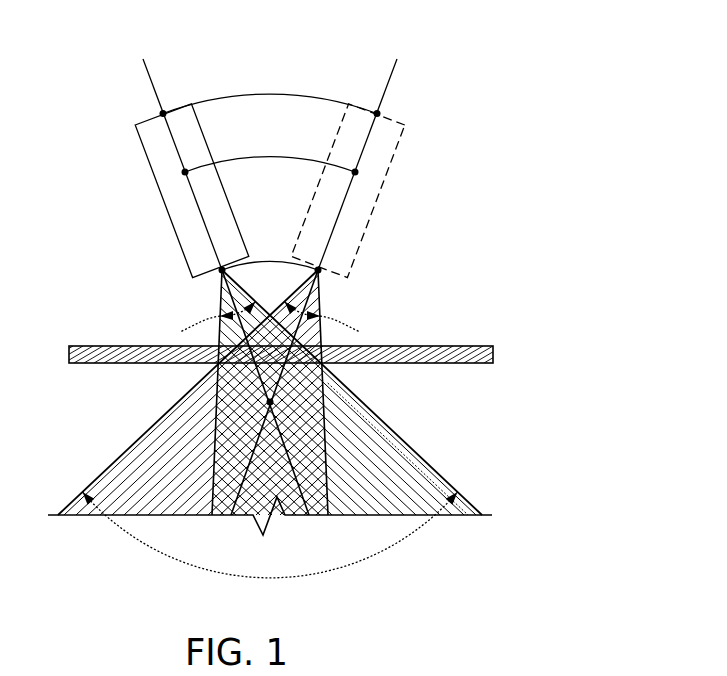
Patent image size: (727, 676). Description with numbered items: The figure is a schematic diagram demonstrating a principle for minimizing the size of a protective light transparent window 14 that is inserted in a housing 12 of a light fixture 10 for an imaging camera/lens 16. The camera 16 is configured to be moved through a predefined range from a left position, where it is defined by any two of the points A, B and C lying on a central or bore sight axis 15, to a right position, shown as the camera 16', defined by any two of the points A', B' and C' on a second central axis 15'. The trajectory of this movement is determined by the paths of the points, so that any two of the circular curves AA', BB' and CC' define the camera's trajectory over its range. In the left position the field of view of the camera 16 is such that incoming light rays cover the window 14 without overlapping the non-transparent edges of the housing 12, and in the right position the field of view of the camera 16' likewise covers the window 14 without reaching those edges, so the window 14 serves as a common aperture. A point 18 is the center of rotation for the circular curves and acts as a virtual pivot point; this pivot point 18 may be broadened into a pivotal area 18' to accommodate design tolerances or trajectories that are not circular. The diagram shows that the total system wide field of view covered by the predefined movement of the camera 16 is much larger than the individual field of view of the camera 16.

The light fixture 10 is at (489, 106).
The housing 12 is at (437, 344).
The protective light transparent window 14 is at (212, 392).
The central axis 15 is at (182, 145).
The central axis 15' is at (393, 141).
The imaging camera/lens 16 is at (177, 191).
The imaging camera/lens 16' is at (388, 191).
The virtual pivot point 18 is at (352, 392).
The pivotal area 18' is at (398, 449).